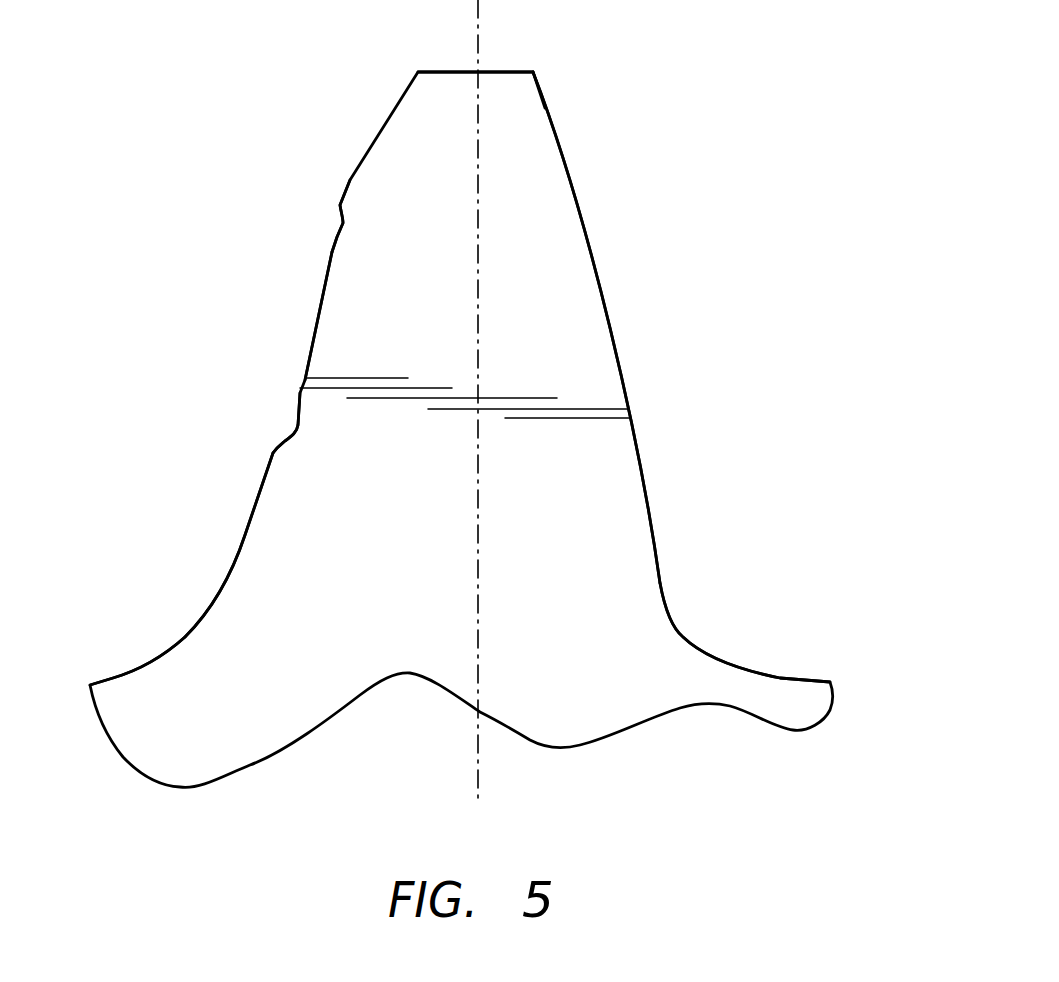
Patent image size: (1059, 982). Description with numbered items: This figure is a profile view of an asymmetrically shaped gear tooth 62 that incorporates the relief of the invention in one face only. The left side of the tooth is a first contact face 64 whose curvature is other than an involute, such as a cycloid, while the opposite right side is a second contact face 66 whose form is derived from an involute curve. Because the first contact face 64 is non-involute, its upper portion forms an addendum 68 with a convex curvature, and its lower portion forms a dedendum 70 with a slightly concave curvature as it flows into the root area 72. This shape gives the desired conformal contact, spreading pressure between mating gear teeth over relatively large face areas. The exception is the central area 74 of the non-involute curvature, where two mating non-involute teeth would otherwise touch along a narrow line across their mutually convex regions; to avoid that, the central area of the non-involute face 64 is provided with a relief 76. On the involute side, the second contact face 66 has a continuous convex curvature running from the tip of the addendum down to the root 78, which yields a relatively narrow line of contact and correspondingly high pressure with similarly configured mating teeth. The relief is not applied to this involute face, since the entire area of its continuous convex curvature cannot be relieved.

The gear tooth 62 is at (322, 737).
The first contact face 64 is at (272, 453).
The second contact face 66 is at (613, 332).
The addendum 68 is at (400, 97).
The dedendum 70 is at (240, 550).
The root area 72 is at (157, 660).
The central area 74 is at (282, 335).
The relief 76 is at (330, 247).
The root 78 is at (683, 633).